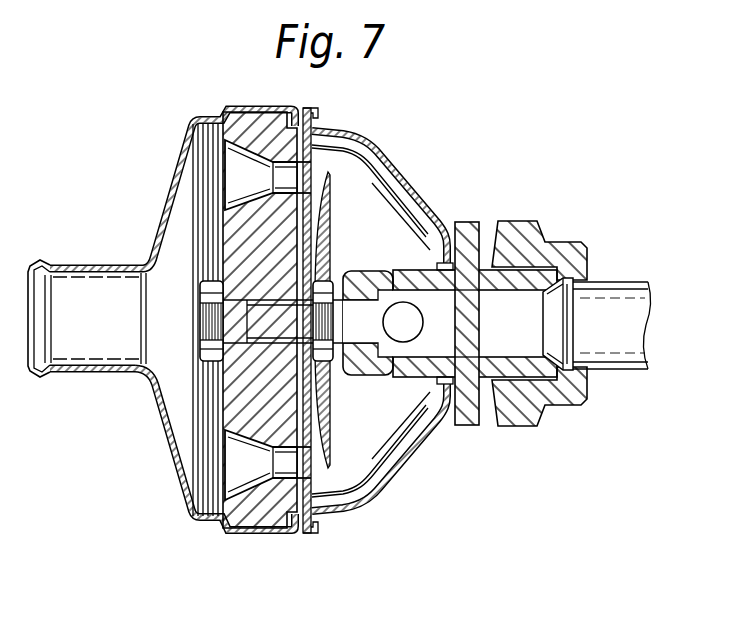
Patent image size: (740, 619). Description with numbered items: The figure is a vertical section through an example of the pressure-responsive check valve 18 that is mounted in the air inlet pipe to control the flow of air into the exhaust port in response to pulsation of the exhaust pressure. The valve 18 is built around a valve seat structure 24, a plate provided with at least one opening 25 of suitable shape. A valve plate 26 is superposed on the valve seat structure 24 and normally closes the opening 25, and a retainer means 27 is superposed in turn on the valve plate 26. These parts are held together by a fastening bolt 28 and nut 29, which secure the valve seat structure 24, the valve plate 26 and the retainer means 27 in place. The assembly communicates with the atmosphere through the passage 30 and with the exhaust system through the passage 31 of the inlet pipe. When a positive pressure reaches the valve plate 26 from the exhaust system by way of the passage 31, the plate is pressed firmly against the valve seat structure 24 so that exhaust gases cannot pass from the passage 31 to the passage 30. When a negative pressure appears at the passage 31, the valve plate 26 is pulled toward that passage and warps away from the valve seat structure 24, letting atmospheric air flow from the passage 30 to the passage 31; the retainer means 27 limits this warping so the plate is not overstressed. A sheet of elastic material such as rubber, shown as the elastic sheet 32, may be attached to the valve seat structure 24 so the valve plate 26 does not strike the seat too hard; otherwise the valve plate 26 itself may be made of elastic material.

The pressure-responsive valve 18 is at (382, 314).
The valve seat structure 24 is at (245, 233).
The opening 25 is at (243, 176).
The valve plate 26 is at (325, 488).
The retainer means 27 is at (373, 492).
The bolt 28 is at (200, 357).
The nut 29 is at (328, 362).
The passage 30 is at (83, 347).
The passage 31 is at (622, 350).
The elastic sheet 32 is at (304, 534).